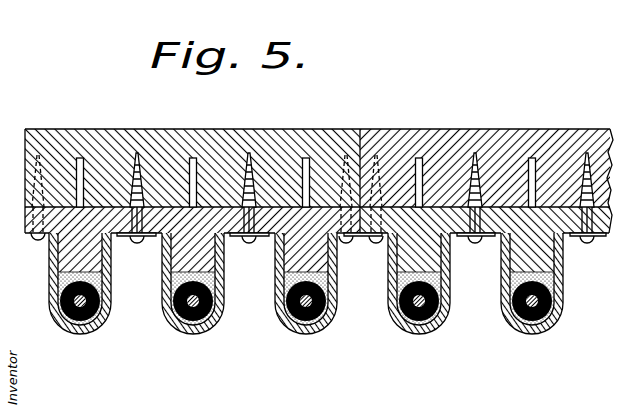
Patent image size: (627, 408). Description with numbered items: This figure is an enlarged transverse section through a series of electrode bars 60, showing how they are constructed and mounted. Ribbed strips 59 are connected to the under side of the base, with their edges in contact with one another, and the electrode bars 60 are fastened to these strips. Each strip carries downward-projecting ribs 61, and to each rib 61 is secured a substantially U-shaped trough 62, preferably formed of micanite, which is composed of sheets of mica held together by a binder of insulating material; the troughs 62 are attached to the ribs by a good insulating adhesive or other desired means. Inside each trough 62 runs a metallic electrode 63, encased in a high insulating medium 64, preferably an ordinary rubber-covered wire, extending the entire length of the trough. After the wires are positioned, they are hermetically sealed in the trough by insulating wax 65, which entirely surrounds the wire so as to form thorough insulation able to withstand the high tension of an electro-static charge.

The ribbed strips 59 is at (95, 213).
The electrode bars 60 is at (318, 271).
The ribs 61 is at (188, 252).
The U-shaped trough 62 is at (198, 328).
The metallic electrode 63 is at (72, 329).
The high insulating medium 64 is at (100, 323).
The insulating wax 65 is at (173, 289).